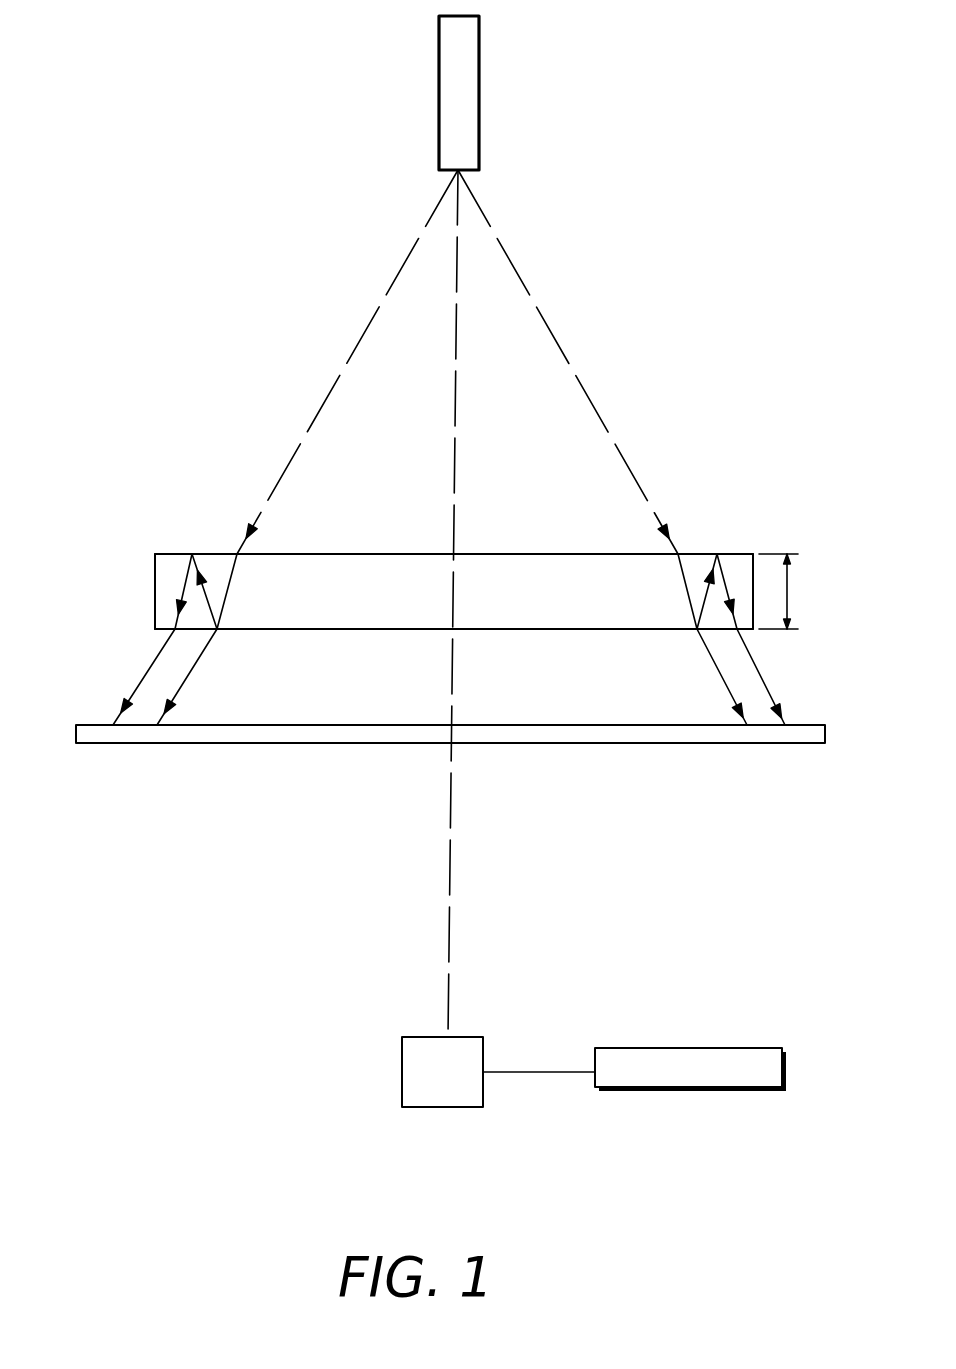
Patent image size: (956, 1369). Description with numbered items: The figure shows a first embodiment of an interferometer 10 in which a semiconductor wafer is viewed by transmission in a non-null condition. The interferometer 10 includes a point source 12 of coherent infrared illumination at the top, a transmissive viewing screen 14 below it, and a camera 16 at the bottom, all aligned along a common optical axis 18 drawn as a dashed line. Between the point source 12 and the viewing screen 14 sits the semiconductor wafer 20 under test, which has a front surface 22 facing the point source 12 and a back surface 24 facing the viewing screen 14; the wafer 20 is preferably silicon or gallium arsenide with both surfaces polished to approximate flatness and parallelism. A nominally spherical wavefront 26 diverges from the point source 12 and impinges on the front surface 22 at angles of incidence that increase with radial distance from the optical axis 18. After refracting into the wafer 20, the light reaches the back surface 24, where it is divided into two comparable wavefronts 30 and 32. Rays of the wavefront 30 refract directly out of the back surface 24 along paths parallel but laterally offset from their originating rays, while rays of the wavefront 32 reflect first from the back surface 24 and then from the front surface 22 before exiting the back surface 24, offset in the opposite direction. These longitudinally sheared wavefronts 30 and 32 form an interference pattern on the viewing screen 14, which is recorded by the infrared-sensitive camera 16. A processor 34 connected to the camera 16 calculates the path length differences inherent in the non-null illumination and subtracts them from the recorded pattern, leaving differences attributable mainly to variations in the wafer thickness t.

The interferometer 10 is at (236, 208).
The point source 12 is at (468, 68).
The transmissive viewing screen 14 is at (295, 742).
The camera 16 is at (472, 1060).
The optical axis 18 is at (450, 866).
The semiconductor wafer 20 is at (324, 576).
The front surface 22 is at (522, 555).
The back surface 24 is at (523, 630).
The spherical wavefront 26 is at (323, 397).
The wavefront 30 is at (198, 653).
The wavefront 32 is at (158, 654).
The processor 34 is at (685, 1048).
The wafer thickness t is at (790, 592).